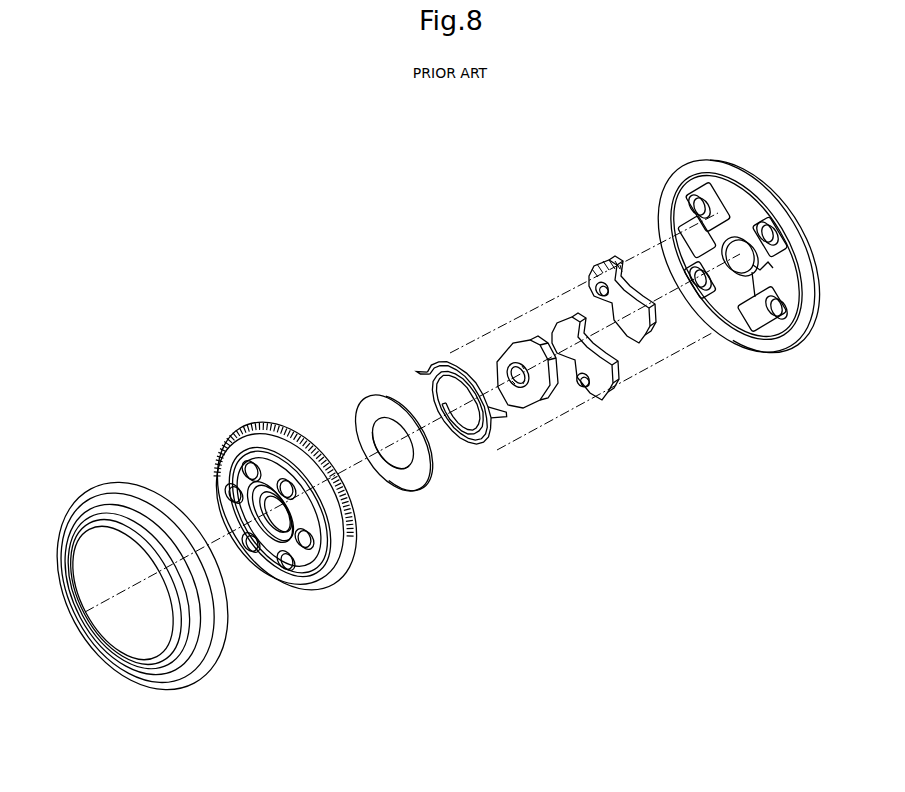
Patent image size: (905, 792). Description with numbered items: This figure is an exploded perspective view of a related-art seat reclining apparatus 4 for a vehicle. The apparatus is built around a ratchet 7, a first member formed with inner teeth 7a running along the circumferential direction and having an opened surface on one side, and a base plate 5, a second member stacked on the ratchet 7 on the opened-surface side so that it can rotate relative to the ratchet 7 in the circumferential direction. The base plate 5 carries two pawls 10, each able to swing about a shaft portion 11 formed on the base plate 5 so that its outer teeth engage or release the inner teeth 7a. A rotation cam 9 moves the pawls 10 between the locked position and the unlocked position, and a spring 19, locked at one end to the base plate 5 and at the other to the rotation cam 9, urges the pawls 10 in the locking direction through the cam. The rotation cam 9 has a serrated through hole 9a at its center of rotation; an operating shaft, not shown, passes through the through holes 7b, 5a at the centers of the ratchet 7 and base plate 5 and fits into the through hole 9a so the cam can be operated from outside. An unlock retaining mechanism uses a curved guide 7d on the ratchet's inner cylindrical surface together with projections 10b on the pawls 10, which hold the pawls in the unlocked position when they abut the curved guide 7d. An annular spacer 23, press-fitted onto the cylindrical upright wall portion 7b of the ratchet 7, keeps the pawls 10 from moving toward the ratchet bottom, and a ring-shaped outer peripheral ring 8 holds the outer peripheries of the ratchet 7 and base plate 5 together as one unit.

The reclining apparatus 4 is at (487, 268).
The base plate 5 is at (739, 274).
The through hole 5a is at (733, 240).
The ratchet 7 is at (294, 493).
The inner teeth 7a is at (365, 545).
The through hole / cylindrical upright wall portion 7b is at (270, 515).
The curved guide 7d is at (327, 543).
The outer peripheral ring 8 is at (121, 478).
The rotation cam 9 is at (536, 380).
The through hole 9a is at (517, 362).
The pawls 10 is at (608, 352).
The projections 10b is at (600, 286).
The shaft portion 11 is at (768, 226).
The spring 19 is at (470, 356).
The annular spacer 23 is at (377, 392).